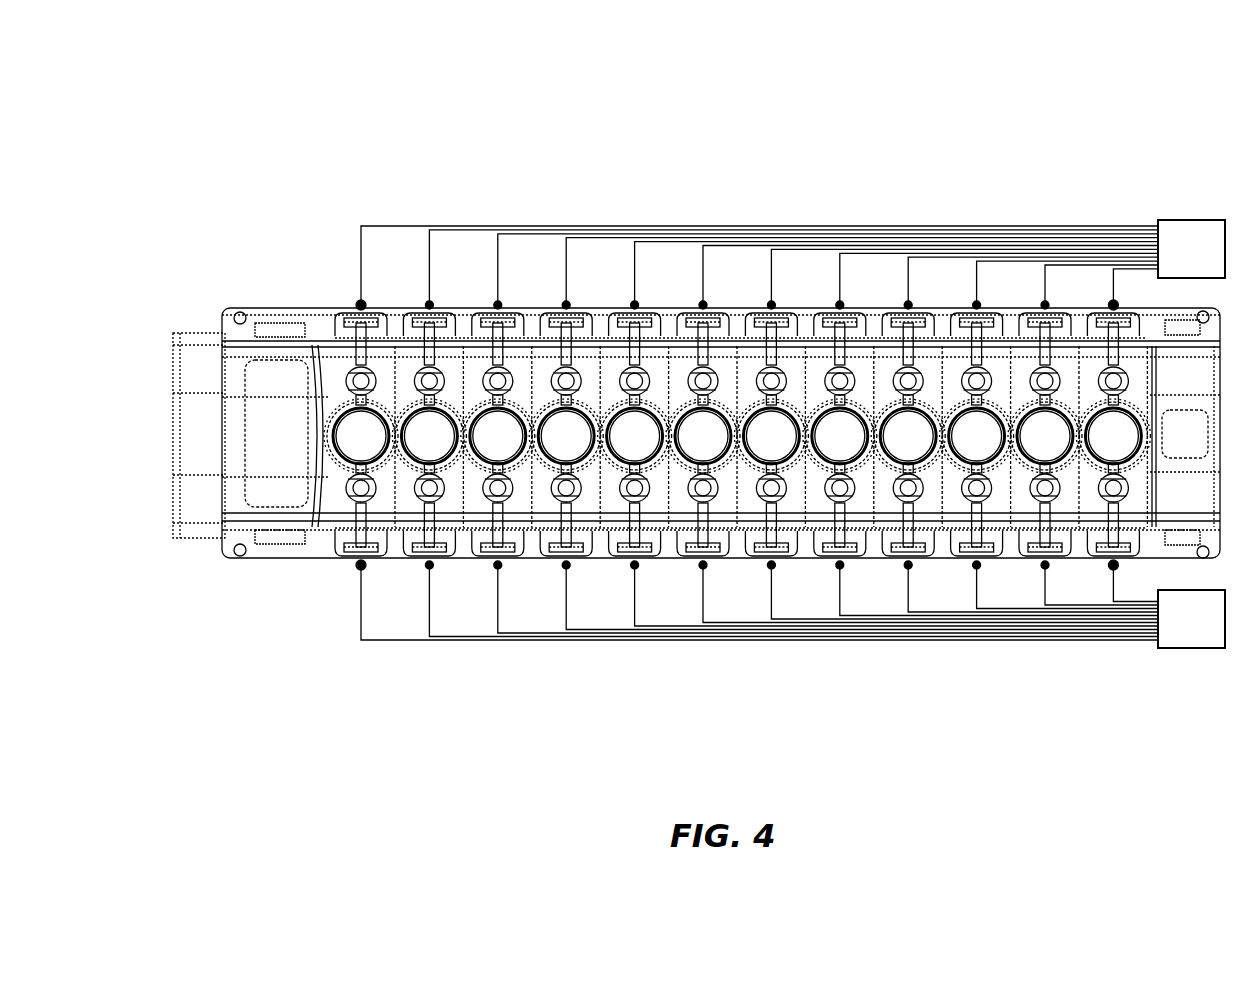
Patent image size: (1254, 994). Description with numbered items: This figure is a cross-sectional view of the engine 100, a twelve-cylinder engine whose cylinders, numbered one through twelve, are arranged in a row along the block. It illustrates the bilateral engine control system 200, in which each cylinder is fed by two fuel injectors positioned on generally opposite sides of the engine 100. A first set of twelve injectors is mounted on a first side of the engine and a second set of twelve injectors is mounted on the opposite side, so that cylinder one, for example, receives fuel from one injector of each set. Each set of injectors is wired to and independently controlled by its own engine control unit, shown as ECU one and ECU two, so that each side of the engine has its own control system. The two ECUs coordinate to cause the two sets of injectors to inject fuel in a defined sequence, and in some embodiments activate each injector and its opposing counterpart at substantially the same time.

The engine 100 is at (222, 300).
The bilateral engine control system 200 is at (796, 402).